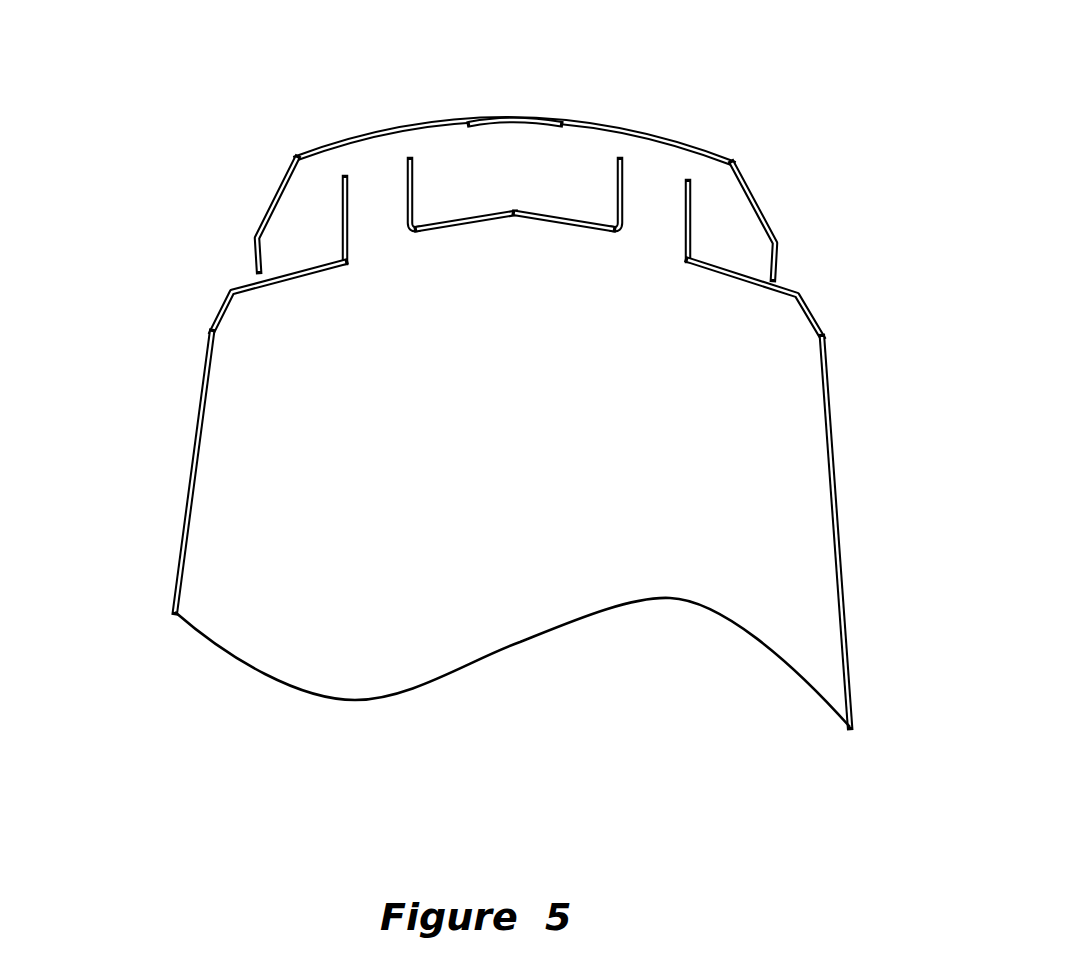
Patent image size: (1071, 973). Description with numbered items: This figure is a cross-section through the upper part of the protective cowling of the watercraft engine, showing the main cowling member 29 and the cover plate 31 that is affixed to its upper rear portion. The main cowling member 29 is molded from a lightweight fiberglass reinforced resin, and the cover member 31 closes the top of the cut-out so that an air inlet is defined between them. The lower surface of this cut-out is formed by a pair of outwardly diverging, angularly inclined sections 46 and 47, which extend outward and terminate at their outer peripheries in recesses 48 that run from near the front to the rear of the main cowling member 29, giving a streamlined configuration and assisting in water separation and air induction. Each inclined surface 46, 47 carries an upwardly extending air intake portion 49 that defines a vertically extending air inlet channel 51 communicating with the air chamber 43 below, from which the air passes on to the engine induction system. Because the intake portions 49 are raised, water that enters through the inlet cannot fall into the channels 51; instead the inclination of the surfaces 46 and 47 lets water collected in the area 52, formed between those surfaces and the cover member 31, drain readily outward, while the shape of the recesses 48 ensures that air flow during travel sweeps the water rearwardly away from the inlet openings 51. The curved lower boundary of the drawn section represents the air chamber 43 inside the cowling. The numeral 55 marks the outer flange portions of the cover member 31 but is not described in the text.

The main cowling member 29 is at (188, 470).
The cover plate 31 is at (324, 138).
The air chamber 43 is at (570, 590).
The inclined section 46 is at (465, 218).
The inclined section 47 is at (572, 218).
The recess 48 is at (218, 313).
The air intake portion 49 is at (416, 182).
The air inlet channel 51 is at (378, 238).
The area between surfaces and cover member 52 is at (552, 160).
The outer flange 55 is at (272, 202).